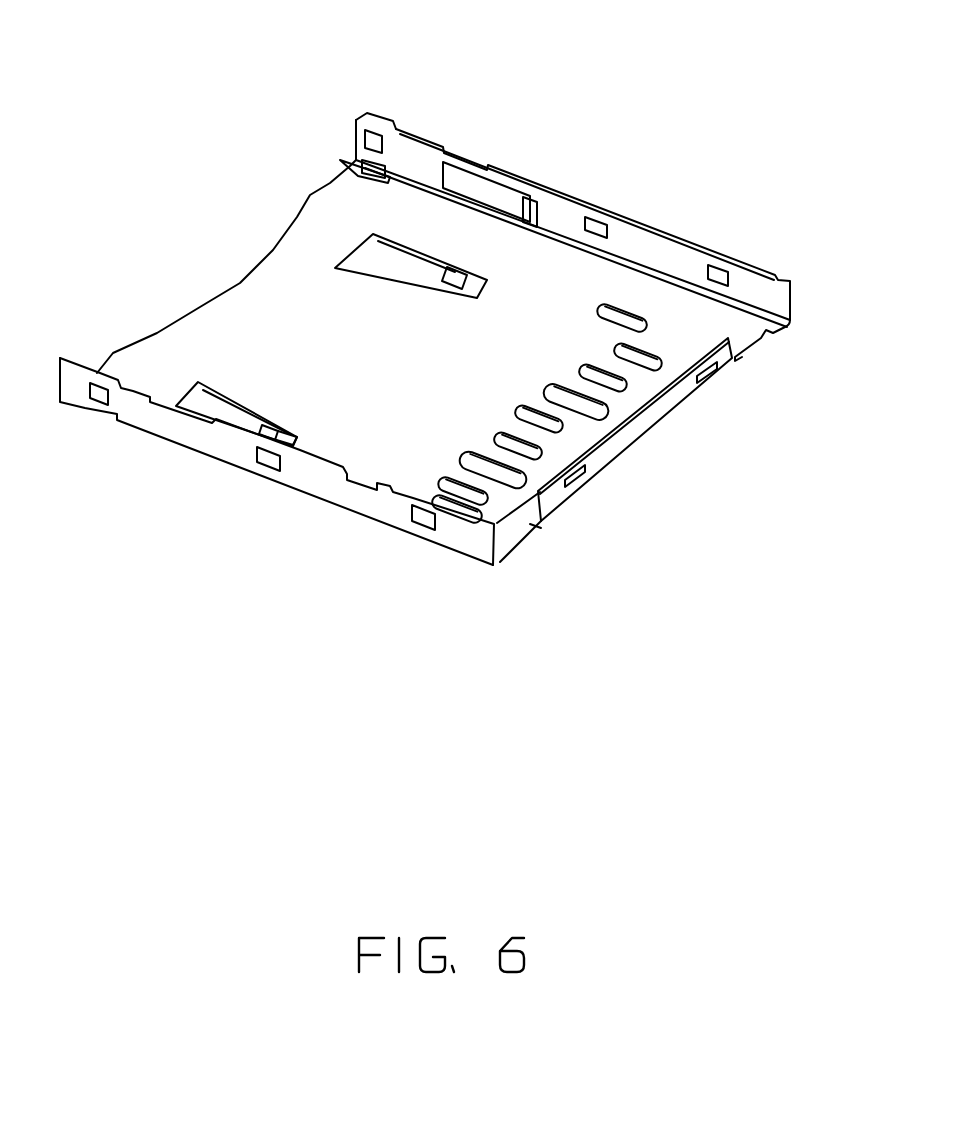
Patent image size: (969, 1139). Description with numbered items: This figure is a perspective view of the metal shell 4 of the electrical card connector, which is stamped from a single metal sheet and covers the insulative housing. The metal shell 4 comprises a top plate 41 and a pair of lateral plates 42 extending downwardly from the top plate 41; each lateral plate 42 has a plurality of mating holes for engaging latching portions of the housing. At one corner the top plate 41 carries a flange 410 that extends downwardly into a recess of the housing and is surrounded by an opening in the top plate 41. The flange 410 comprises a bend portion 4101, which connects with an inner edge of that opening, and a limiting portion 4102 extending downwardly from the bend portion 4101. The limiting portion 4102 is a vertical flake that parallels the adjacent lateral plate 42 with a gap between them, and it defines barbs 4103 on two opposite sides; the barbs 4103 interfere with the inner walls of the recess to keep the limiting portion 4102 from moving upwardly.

The metal shell 4 is at (582, 180).
The top plate 41 is at (578, 286).
The lateral plate 42 is at (460, 530).
The flange 410 is at (347, 158).
The bend portion 4101 is at (367, 173).
The limiting portion 4102 is at (363, 118).
The barb 4103 is at (388, 170).